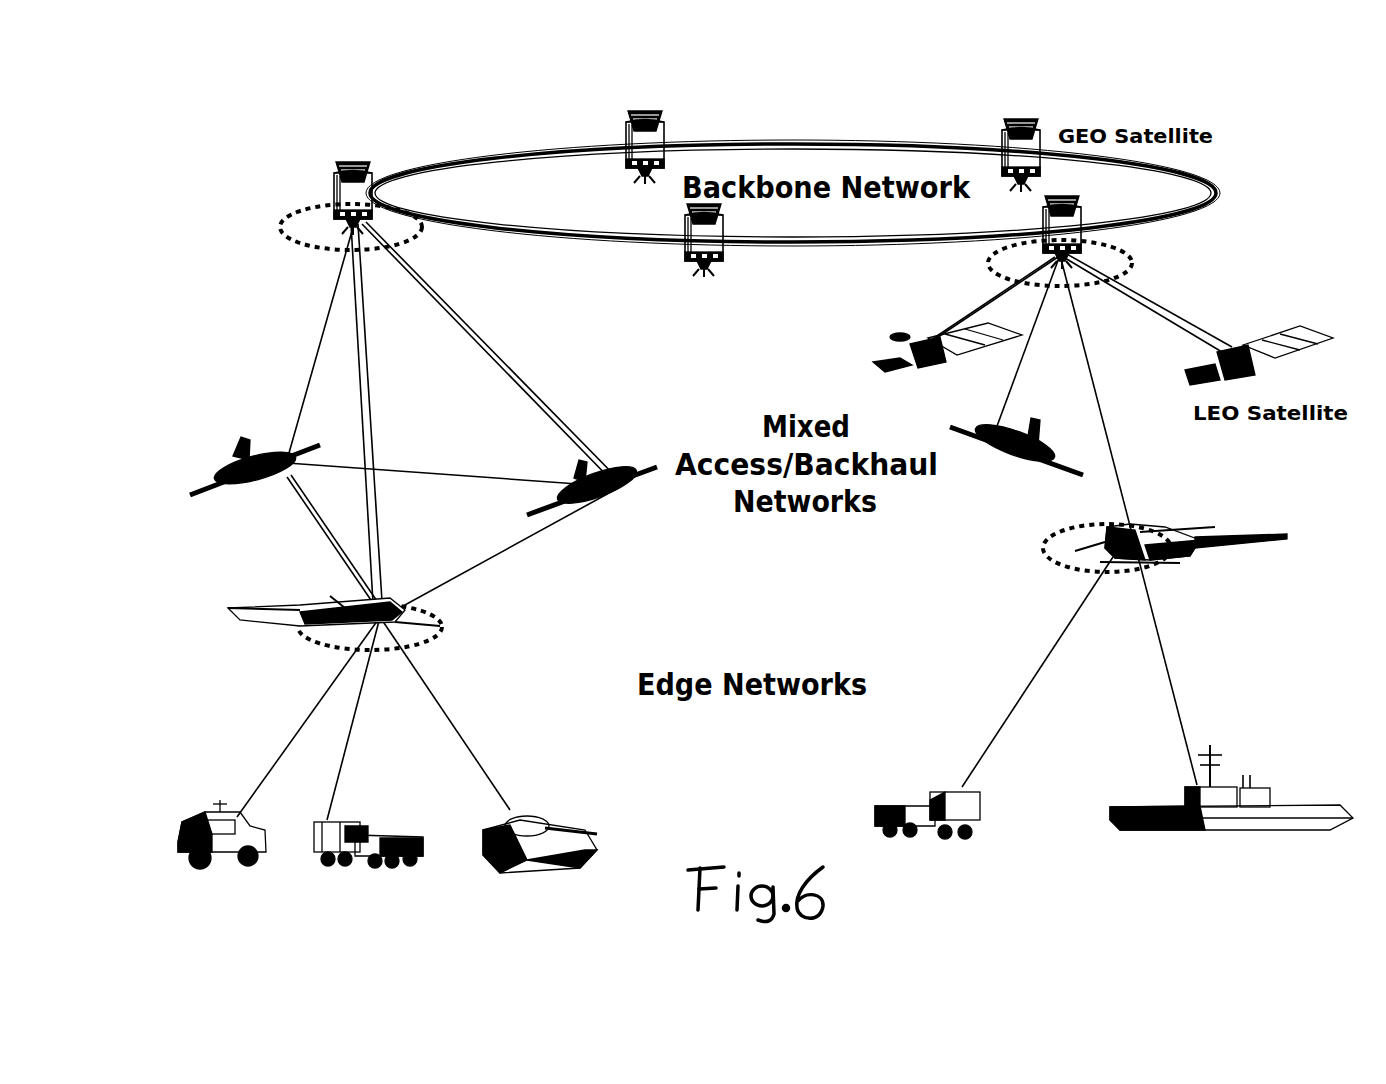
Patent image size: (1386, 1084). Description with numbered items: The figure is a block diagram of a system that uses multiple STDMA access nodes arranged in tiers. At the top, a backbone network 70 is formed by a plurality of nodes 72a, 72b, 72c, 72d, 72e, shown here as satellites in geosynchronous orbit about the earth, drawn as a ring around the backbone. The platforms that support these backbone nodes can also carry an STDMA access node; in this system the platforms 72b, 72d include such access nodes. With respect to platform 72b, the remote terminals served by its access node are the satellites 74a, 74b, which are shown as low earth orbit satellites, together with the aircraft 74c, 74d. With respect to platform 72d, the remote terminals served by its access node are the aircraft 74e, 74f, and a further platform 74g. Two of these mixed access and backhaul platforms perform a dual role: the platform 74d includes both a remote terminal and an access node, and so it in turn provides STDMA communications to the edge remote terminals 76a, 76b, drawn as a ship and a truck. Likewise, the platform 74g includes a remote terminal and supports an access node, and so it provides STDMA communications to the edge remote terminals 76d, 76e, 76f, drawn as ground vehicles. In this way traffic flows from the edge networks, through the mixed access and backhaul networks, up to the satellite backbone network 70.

The backbone network 70 is at (853, 131).
The node 72a is at (1030, 120).
The platform 72b is at (1082, 235).
The node 72c is at (722, 257).
The platform 72d is at (333, 186).
The node 72e is at (627, 128).
The satellite 74a is at (1252, 352).
The satellite 74b is at (895, 364).
The aircraft 74c is at (1050, 436).
The platform 74d is at (1148, 523).
The aircraft 74e is at (570, 475).
The aircraft 74f is at (247, 447).
The platform 74g is at (417, 606).
The remote terminal 76a is at (1256, 784).
The remote terminal 76b is at (940, 785).
The remote terminal 76d is at (527, 813).
The remote terminal 76e is at (360, 817).
The remote terminal 76f is at (200, 817).